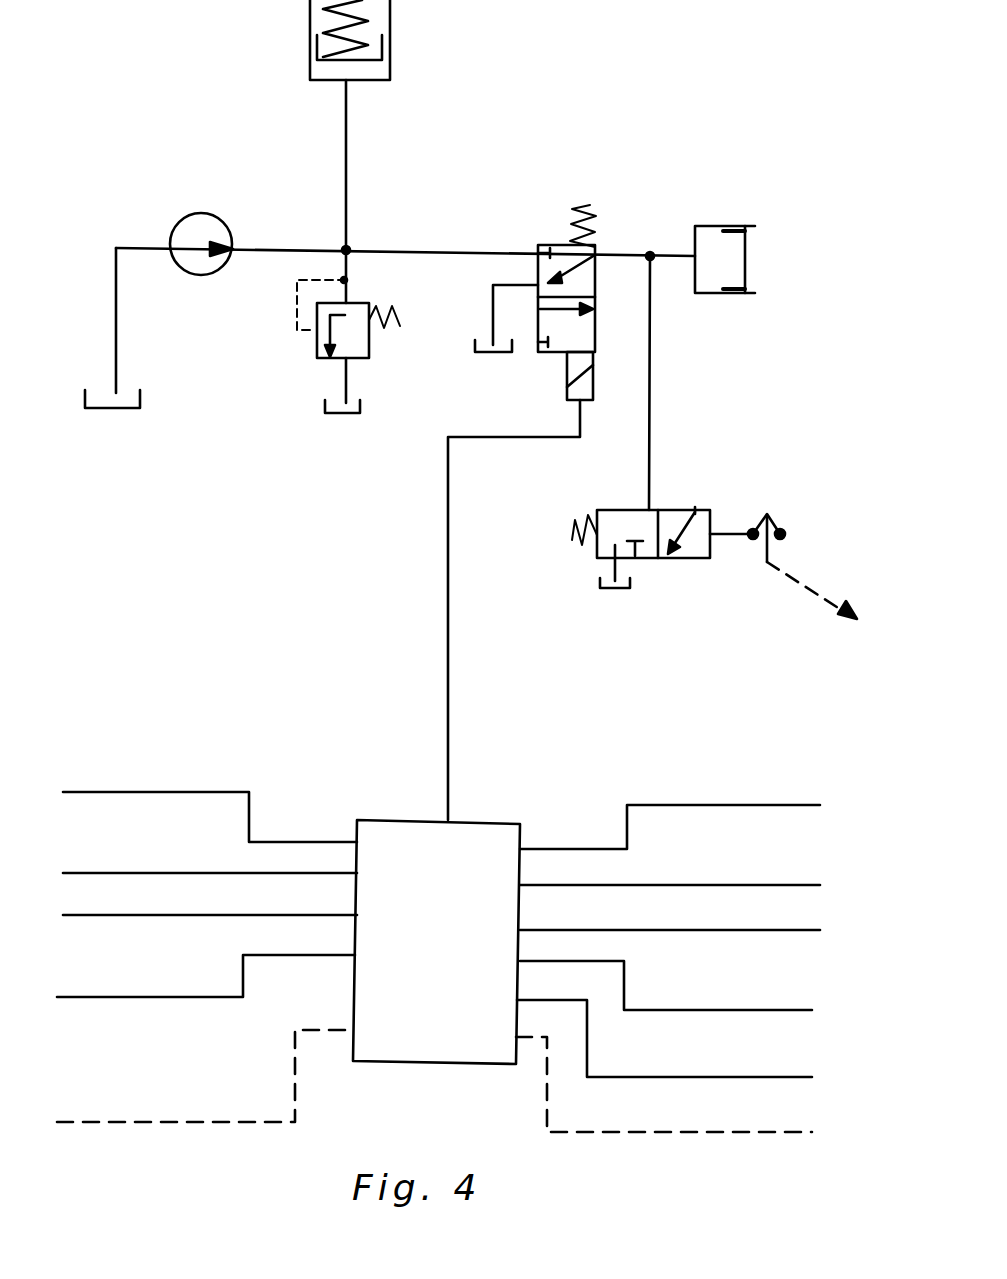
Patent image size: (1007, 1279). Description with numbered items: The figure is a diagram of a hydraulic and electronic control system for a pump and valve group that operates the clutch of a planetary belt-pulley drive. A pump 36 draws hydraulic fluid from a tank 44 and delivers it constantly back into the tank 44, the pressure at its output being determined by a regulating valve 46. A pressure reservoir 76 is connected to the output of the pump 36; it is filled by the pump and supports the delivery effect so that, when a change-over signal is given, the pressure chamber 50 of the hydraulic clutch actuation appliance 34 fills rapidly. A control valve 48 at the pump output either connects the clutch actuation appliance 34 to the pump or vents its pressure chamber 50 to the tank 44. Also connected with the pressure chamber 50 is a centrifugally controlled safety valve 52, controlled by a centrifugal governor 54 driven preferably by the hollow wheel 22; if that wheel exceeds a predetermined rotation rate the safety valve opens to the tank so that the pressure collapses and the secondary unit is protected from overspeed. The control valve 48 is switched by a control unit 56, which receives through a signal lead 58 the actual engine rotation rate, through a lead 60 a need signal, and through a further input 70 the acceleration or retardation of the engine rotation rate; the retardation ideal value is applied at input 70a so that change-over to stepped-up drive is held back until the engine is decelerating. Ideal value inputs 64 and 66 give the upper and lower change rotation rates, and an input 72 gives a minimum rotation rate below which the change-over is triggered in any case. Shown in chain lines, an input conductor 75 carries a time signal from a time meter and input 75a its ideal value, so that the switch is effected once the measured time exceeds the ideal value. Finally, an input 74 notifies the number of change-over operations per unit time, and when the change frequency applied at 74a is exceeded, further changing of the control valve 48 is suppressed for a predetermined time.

The hollow wheel 22 is at (821, 590).
The hydraulic clutch actuation appliance 34 is at (730, 227).
The pump 36 is at (207, 213).
The tank 44 is at (127, 410).
The regulating valve 46 is at (369, 343).
The control valve 48 is at (595, 313).
The pressure chamber 50 is at (735, 277).
The centrifugally controlled safety valve 52 is at (675, 512).
The centrifugal governor 54 is at (773, 522).
The control unit 56 is at (482, 824).
The signal lead 58 is at (204, 792).
The lead for need signal 60 is at (210, 918).
The ideal value input 64 is at (808, 803).
The ideal value input 66 is at (808, 883).
The input 70 is at (290, 873).
The input 70a is at (797, 1010).
The input 72 is at (808, 928).
The input 74 is at (195, 1000).
The input 74a is at (790, 1078).
The input conductor 75 is at (213, 1122).
The input 75a is at (797, 1137).
The pressure reservoir 76 is at (390, 58).